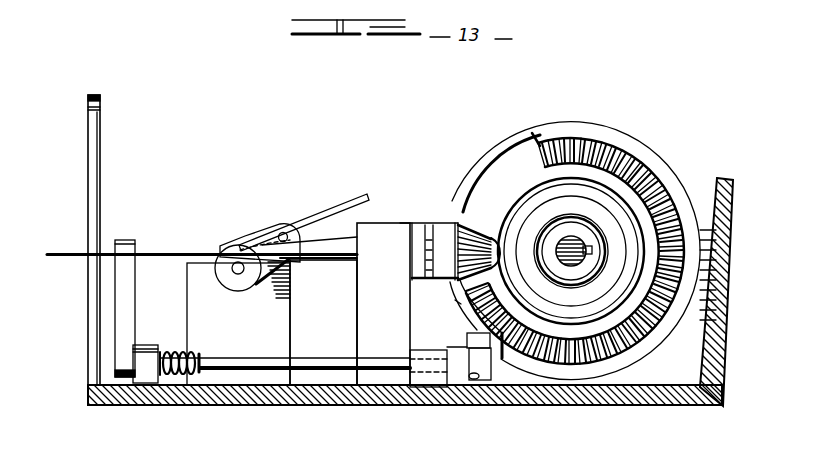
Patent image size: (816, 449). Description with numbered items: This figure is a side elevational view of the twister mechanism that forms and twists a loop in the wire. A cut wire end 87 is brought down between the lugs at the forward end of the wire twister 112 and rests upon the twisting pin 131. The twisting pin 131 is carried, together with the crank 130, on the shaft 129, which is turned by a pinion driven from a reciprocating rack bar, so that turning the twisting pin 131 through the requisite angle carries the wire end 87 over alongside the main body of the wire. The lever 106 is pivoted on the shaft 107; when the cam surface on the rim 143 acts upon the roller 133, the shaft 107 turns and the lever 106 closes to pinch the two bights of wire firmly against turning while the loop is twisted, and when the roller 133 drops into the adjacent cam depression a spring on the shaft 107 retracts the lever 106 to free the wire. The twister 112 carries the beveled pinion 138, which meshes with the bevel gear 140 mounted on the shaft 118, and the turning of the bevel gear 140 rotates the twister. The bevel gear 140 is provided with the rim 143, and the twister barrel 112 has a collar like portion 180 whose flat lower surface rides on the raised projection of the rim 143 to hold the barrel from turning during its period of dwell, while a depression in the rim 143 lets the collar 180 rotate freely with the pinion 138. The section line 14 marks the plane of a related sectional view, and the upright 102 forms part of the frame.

The upright frame post 102 is at (99, 135).
The lever 106 is at (118, 297).
The shaft 107 is at (248, 365).
The shaft 129 is at (238, 276).
The crank 130 is at (273, 233).
The wire end 87 is at (313, 217).
The wire twister 112 is at (338, 242).
The twisting pin 131 is at (287, 241).
The collar like portion 180 is at (453, 232).
The beveled pinion 138 is at (470, 232).
The roller 133 is at (467, 338).
The rim 143 is at (580, 122).
The beveled gear 140 is at (630, 157).
The shaft 118 is at (573, 262).
The section line 14- 14 is at (445, 380).